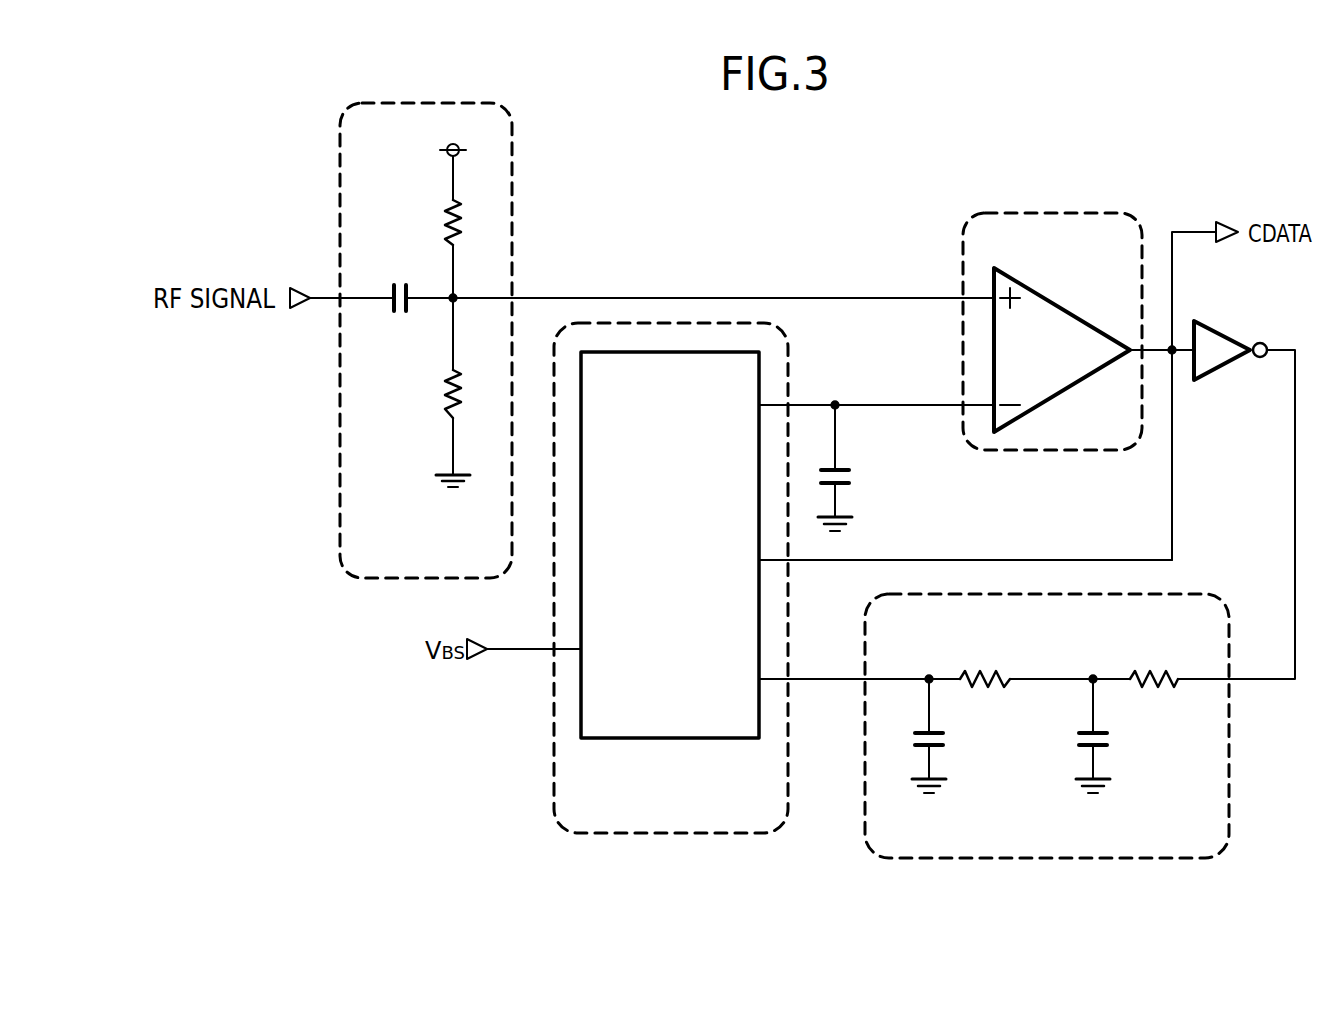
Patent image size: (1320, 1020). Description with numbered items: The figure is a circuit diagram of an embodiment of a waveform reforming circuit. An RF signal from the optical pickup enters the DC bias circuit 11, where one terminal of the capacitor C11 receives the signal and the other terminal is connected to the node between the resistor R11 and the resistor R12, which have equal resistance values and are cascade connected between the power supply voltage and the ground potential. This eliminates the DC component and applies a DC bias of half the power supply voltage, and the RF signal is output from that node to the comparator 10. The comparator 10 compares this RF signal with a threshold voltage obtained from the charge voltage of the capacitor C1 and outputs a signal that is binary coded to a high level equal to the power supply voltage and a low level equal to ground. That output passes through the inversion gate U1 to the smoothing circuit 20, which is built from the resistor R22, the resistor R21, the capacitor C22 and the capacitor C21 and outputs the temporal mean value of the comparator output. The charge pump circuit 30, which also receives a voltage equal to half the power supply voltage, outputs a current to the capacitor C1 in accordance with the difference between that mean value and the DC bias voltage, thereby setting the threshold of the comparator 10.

The comparator 10 is at (963, 240).
The DC bias circuit 11 is at (391, 340).
The smoothing circuit 20 is at (1012, 736).
The charge pump circuit 30 is at (553, 765).
The resistor R11 is at (445, 223).
The resistor R12 is at (437, 396).
The capacitor C11 is at (400, 313).
The capacitor C1 is at (852, 478).
The resistor R21 is at (1155, 668).
The resistor R22 is at (988, 668).
The capacitor C21 is at (1112, 738).
The capacitor C22 is at (948, 738).
The inversion gate U1 is at (1215, 378).